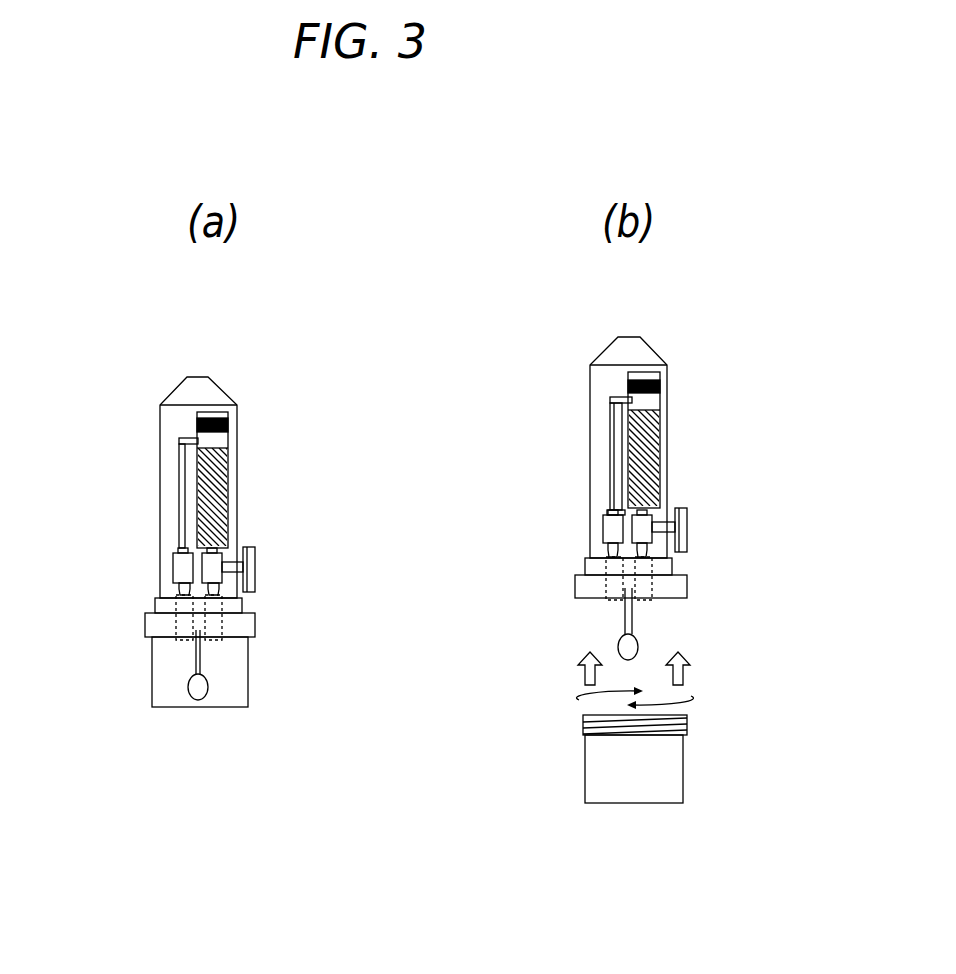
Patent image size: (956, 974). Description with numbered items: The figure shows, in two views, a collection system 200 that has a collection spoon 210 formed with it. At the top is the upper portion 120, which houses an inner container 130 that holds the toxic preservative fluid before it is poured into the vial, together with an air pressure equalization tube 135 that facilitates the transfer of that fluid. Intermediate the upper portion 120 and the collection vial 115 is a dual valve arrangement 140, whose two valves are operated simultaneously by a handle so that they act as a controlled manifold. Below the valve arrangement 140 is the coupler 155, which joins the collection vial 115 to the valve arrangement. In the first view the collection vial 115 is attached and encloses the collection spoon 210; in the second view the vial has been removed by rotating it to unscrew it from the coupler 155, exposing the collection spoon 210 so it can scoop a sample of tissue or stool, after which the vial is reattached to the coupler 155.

The upper portion 120 is at (272, 422).
The inner container 130 is at (228, 466).
The air pressure equalization tube 135 is at (182, 472).
The dual valve arrangement 140 is at (288, 545).
The coupler 155 is at (255, 620).
The collection vial 115 is at (248, 648).
The collection spoon 210 is at (198, 687).
The collection system 200 is at (137, 733).